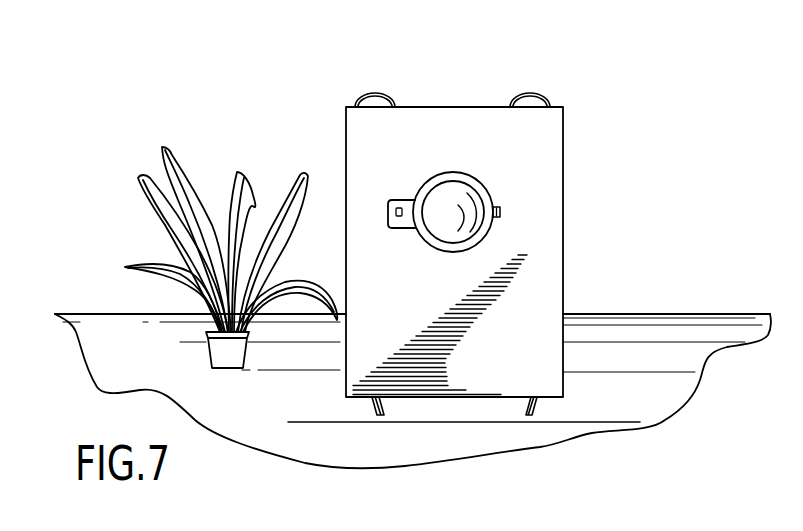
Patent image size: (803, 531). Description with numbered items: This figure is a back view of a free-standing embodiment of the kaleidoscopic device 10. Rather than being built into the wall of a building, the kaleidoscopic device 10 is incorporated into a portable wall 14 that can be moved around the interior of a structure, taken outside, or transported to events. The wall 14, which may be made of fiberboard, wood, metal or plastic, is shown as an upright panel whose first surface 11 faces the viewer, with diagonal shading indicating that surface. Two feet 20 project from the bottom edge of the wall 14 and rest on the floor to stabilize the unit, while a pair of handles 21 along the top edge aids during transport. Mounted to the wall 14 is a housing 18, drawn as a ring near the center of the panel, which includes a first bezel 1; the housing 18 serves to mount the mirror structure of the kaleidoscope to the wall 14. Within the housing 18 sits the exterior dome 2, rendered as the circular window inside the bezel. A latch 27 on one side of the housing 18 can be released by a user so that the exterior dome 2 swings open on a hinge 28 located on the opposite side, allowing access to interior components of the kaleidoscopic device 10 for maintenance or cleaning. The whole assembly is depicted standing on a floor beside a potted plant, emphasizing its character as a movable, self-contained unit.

The kaleidoscopic device 10 is at (596, 134).
The wall 14 is at (450, 121).
The handles 21 is at (383, 95).
The housing 18 is at (482, 187).
The first bezel 1 is at (492, 200).
The exterior dome 2 is at (442, 222).
The latch 27 is at (398, 207).
The hinge 28 is at (500, 215).
The first surface 11 is at (527, 317).
The feet 20 is at (373, 411).